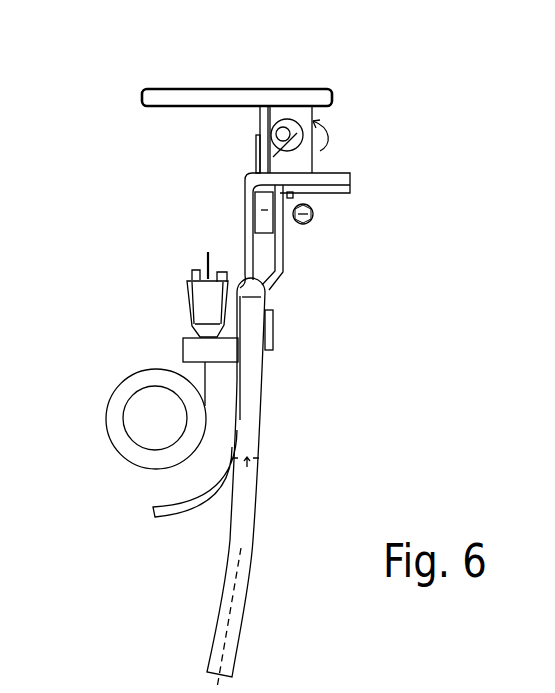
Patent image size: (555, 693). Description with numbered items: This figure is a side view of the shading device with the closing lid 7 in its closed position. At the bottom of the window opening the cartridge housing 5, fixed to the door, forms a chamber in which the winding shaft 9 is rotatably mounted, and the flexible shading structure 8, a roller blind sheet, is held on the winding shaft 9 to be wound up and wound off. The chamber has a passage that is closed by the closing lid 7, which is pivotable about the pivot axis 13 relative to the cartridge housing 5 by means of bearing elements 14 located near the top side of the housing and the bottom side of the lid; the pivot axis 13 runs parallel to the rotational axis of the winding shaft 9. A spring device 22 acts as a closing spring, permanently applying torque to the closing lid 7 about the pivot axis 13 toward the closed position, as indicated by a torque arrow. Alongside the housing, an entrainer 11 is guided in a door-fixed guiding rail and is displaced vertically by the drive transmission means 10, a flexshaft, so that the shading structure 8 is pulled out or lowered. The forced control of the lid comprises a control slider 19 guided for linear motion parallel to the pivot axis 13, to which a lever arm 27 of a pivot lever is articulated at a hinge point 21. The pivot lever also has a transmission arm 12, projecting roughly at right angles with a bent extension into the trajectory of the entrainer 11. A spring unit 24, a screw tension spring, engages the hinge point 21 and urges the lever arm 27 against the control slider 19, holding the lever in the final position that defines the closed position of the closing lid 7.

The cartridge housing 5 is at (167, 518).
The closing lid 7 is at (220, 88).
The flexible shading structure 8 is at (203, 366).
The winding shaft 9 is at (140, 413).
The drive transmission means 10 is at (247, 515).
The entrainer 11 is at (228, 332).
The transmission arm 12 is at (219, 350).
The pivot axis 13 is at (280, 140).
The bearing elements 14 is at (314, 116).
The control slider 19 is at (260, 238).
The hinge point 21 is at (293, 223).
The spring device 22 is at (284, 127).
The spring unit 24 is at (314, 212).
The lever arm 27 is at (285, 262).